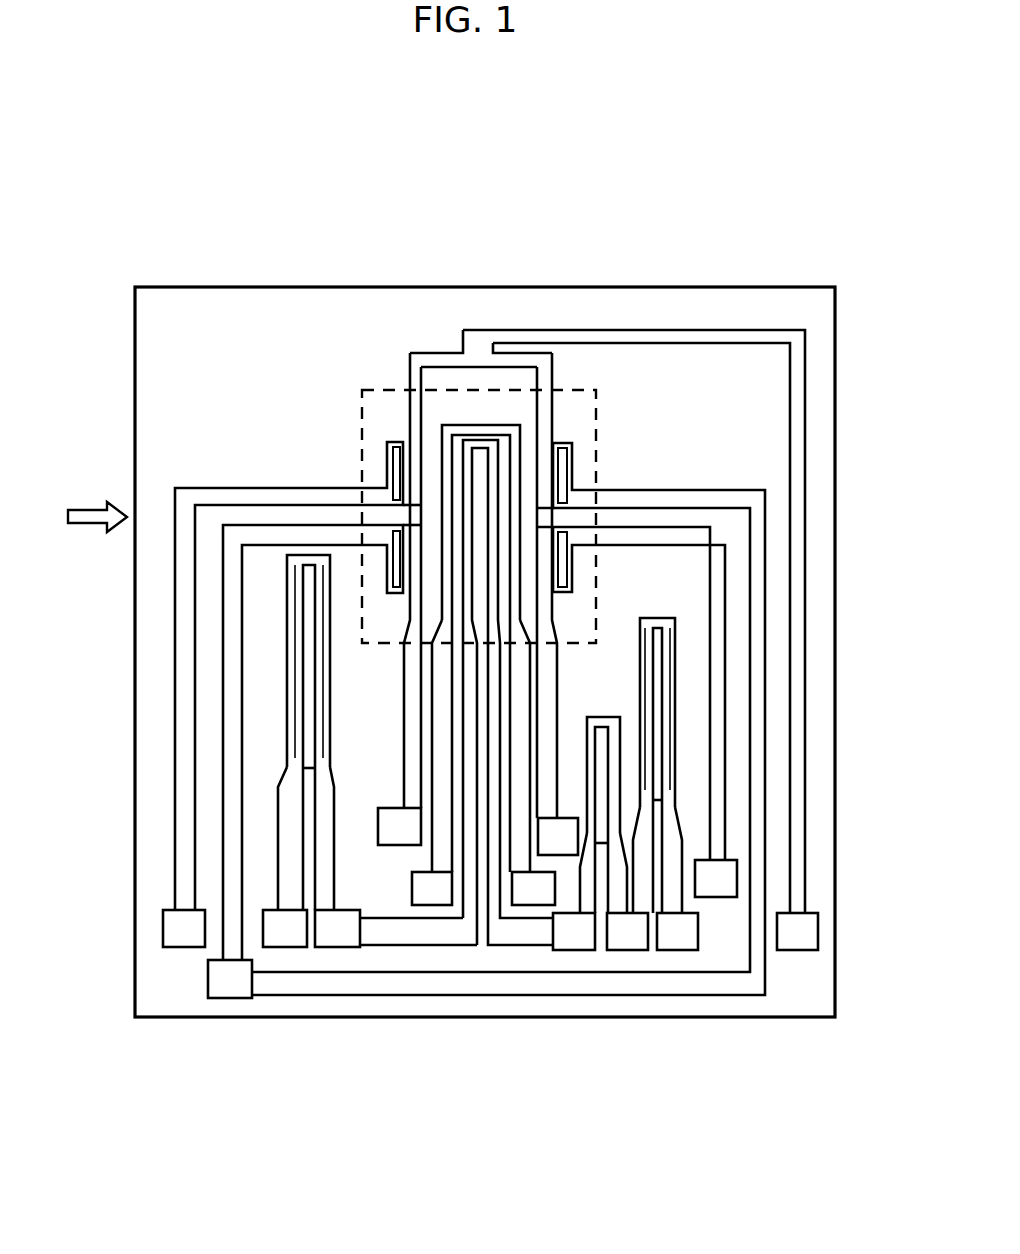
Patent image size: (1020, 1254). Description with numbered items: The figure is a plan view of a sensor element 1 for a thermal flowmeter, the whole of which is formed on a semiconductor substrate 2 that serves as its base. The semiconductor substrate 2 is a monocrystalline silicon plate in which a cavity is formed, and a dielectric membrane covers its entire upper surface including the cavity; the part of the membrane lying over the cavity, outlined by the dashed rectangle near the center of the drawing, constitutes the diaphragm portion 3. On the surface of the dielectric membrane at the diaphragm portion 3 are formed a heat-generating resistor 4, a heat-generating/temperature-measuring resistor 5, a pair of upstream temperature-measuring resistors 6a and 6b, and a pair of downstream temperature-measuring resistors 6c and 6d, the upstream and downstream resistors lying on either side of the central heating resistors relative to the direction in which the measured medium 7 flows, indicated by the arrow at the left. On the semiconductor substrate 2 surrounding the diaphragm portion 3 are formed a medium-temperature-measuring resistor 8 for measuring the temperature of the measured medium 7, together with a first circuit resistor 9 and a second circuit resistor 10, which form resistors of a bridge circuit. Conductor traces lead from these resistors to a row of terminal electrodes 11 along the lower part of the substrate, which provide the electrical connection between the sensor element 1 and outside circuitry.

The sensor element 1 is at (708, 275).
The semiconductor substrate 2 is at (507, 302).
The diaphragm portion 3 is at (571, 388).
The heat-generating resistor 4 is at (410, 438).
The heat-generating/temperature-measuring resistor 5 is at (478, 432).
The upstream temperature-measuring resistor 6a is at (387, 443).
The upstream temperature-measuring resistor 6b is at (396, 595).
The downstream temperature-measuring resistor 6c is at (577, 447).
The downstream temperature-measuring resistor 6d is at (575, 590).
The measured medium 7 is at (78, 510).
The medium-temperature-measuring resistor 8 is at (290, 563).
The first circuit resistor 9 is at (622, 740).
The second circuit resistor 10 is at (673, 650).
The terminal electrodes 11 is at (183, 937).